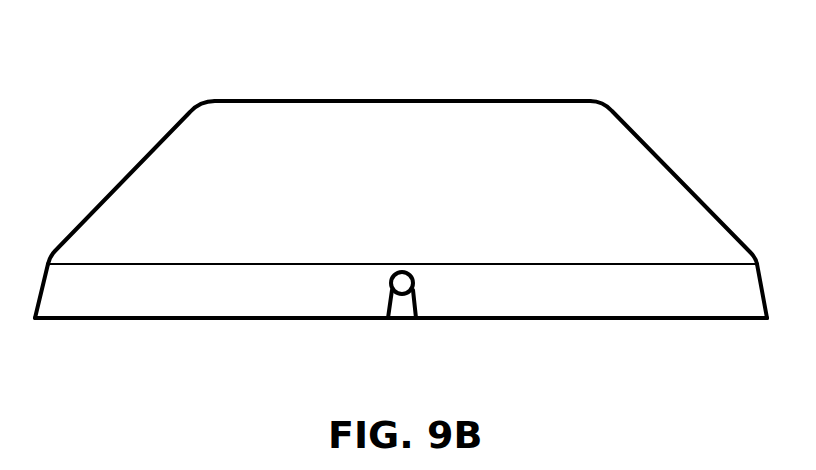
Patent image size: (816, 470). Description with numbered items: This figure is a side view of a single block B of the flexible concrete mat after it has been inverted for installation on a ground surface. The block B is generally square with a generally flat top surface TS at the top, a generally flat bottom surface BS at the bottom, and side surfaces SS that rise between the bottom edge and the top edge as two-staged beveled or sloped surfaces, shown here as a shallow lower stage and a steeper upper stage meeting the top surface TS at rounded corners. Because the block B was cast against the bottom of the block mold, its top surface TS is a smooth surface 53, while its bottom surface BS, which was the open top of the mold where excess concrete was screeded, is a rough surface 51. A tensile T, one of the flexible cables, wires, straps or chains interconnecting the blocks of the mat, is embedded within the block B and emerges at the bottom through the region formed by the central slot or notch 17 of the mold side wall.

The block B is at (401, 211).
The rough surface 51 is at (401, 211).
The smooth surface 53 is at (402, 65).
The central slot or notch 17 is at (413, 296).
The tensile T is at (385, 287).
The top surface TS is at (313, 100).
The side surfaces SS is at (140, 158).
The bottom surface BS is at (183, 320).